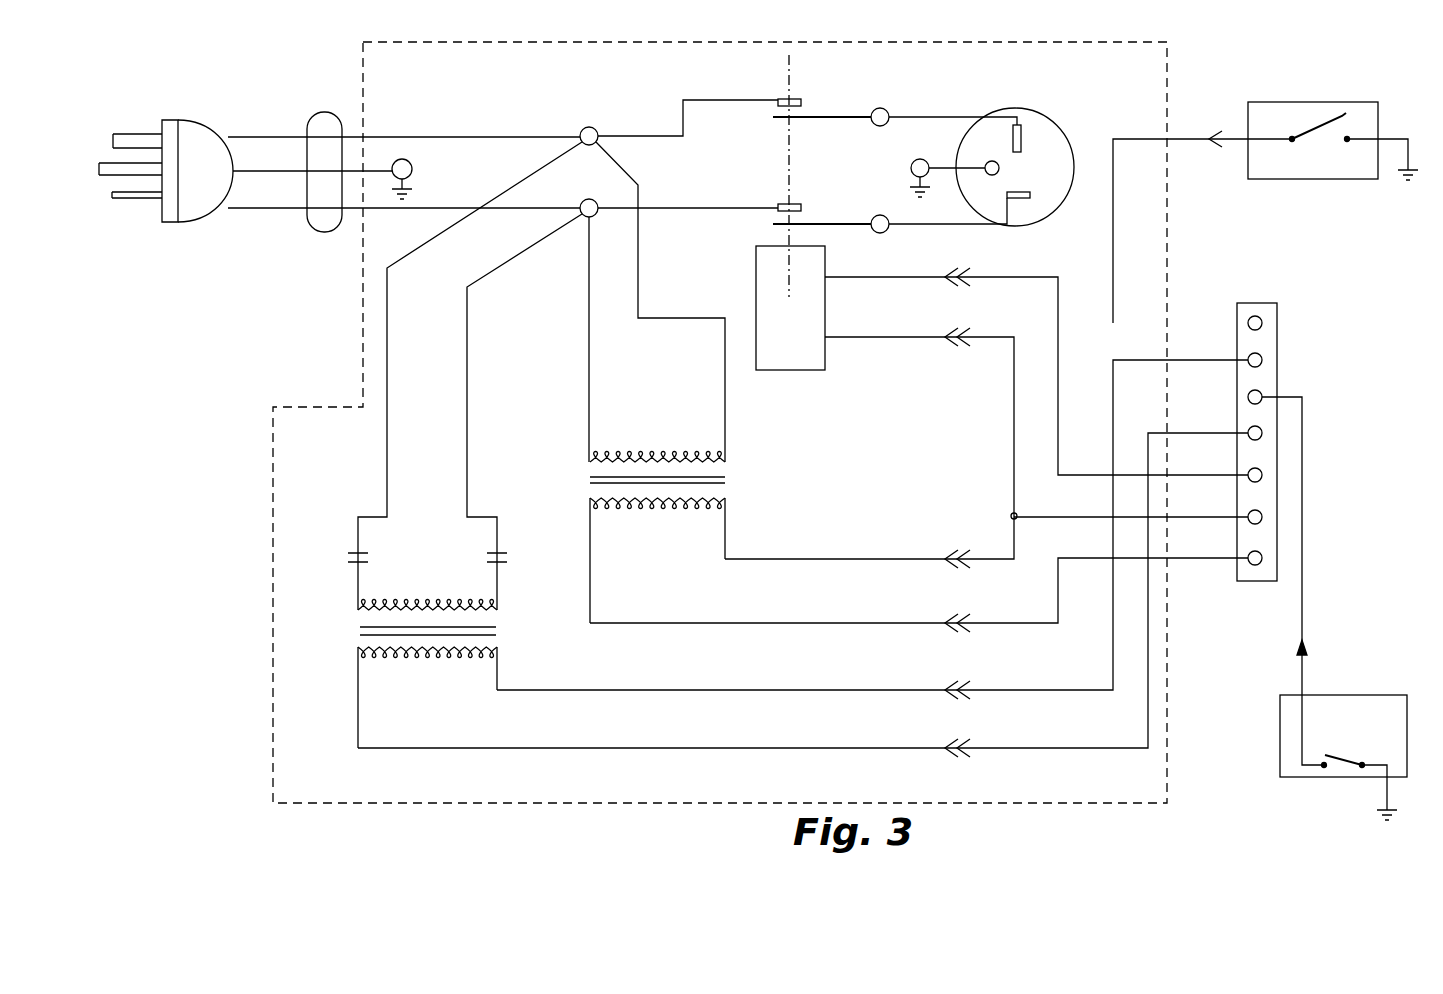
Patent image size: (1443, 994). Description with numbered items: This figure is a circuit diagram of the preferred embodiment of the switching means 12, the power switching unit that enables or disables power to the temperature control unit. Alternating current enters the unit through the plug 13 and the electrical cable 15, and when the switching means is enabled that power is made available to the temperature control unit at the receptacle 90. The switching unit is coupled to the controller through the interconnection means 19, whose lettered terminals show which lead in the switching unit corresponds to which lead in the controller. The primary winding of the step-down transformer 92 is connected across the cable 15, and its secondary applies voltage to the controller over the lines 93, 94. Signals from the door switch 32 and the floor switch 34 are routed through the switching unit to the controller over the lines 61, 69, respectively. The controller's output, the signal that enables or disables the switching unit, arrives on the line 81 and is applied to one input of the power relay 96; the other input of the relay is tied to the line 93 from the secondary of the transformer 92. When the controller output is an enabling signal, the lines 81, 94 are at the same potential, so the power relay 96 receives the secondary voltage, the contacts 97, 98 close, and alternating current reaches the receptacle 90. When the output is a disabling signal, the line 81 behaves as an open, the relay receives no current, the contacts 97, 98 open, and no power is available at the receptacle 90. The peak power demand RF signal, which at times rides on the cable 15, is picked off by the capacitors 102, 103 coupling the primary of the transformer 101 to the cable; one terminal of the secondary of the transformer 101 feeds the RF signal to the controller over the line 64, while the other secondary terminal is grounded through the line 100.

The switching means 12 is at (362, 361).
The plug 13 is at (193, 120).
The electrical cable 15 is at (317, 112).
The interconnection means 19 is at (1258, 303).
The door switch 32 is at (1355, 102).
The floor switch 34 is at (1372, 695).
The line 61 is at (1199, 139).
The line 64 is at (698, 749).
The line 69 is at (1305, 617).
The line 81 is at (1059, 355).
The receptacle 90 is at (985, 114).
The step-down transformer 92 is at (586, 477).
The line 93 is at (1012, 456).
The line 94 is at (866, 624).
The power relay 96 is at (775, 370).
The contact 97 is at (800, 111).
The contact 98 is at (800, 220).
The line 100 is at (666, 690).
The transformer 101 is at (360, 627).
The capacitor 102 is at (368, 553).
The capacitor 103 is at (497, 564).